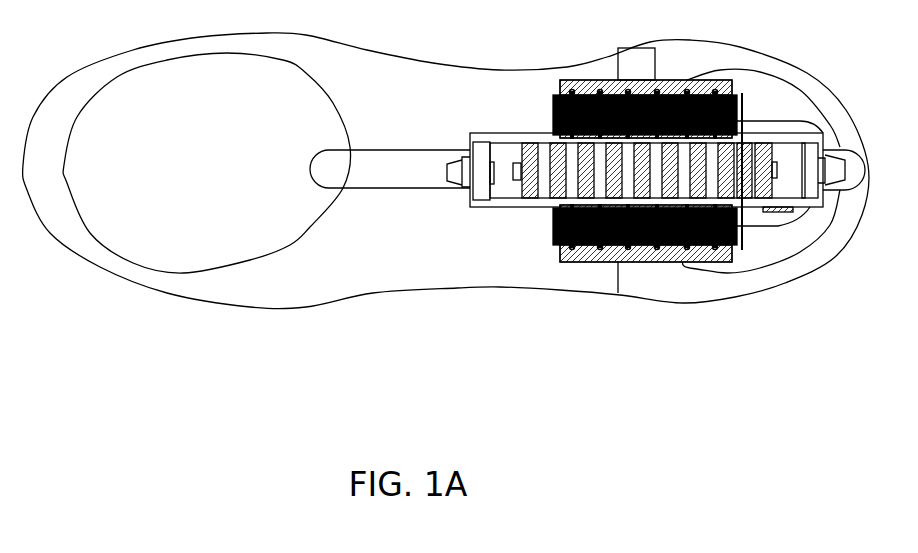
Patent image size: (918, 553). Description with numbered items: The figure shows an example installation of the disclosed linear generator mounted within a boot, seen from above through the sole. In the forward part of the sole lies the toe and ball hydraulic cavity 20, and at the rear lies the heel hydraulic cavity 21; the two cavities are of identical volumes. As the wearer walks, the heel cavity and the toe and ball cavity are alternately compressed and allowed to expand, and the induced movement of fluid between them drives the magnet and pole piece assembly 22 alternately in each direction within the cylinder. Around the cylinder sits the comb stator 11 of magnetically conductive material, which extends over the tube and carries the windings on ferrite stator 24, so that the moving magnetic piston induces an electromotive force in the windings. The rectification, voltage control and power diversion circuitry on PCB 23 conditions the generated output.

The toe and ball hydraulic cavity 20 is at (172, 110).
The comb stator 11 is at (590, 86).
The windings on ferrite stator 24 is at (652, 104).
The rectification, voltage control and power diversion circuitry on PCB 23 is at (768, 128).
The magnet and pole piece assembly 22 is at (675, 182).
The heel hydraulic cavity 21 is at (687, 263).